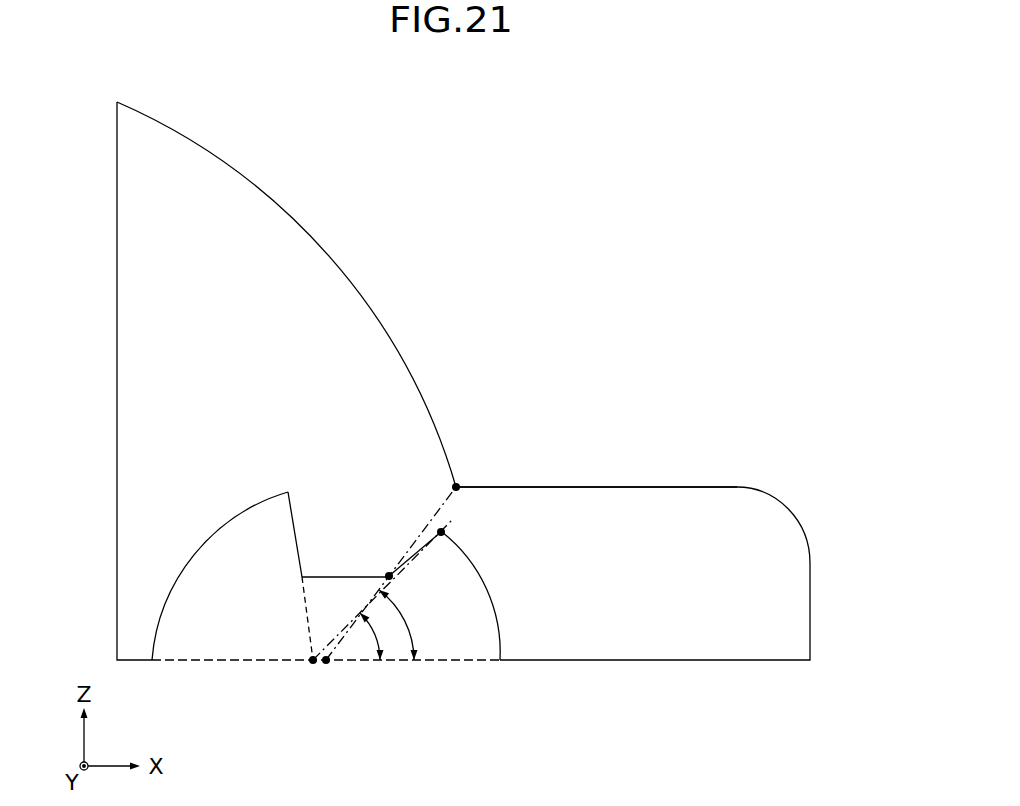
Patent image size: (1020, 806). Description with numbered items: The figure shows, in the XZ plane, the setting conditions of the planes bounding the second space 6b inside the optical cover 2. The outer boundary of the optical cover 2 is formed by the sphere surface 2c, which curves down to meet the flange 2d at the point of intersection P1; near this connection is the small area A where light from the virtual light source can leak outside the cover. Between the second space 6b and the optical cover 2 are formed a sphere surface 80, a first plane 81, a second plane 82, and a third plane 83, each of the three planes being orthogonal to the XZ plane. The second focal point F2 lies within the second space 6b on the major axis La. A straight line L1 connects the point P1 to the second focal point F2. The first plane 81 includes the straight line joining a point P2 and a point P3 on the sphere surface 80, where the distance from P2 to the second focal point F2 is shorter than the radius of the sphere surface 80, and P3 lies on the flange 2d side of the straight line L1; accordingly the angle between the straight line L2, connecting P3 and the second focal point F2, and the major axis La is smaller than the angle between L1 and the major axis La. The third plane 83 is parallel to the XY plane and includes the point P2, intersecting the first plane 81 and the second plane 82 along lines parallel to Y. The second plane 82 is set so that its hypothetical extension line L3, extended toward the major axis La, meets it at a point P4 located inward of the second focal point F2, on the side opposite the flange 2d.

The optical cover 2 is at (226, 141).
The sphere surface 2c is at (289, 222).
The flange 2d is at (657, 500).
The second space 6b is at (238, 643).
The sphere surface 80 is at (199, 548).
The first plane 81 is at (415, 553).
The second plane 82 is at (292, 520).
The third plane 83 is at (351, 577).
The area A is at (455, 425).
The point of intersection P1 is at (455, 486).
The point P2 is at (389, 575).
The point P3 is at (443, 532).
The point of intersection P4 is at (313, 663).
The second focal point F2 is at (327, 663).
The straight line L1 is at (437, 513).
The straight line L2 is at (413, 560).
The hypothetical extension line L3 is at (303, 592).
The major axis La is at (450, 665).